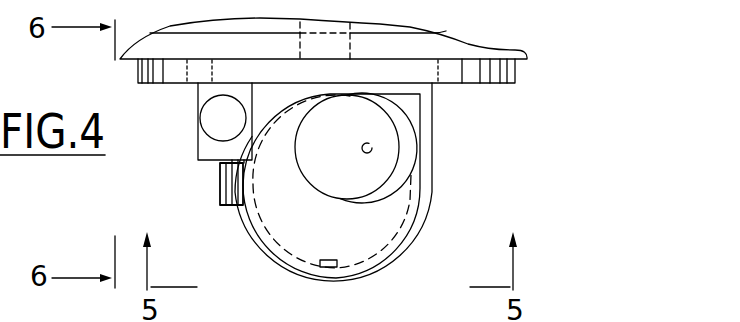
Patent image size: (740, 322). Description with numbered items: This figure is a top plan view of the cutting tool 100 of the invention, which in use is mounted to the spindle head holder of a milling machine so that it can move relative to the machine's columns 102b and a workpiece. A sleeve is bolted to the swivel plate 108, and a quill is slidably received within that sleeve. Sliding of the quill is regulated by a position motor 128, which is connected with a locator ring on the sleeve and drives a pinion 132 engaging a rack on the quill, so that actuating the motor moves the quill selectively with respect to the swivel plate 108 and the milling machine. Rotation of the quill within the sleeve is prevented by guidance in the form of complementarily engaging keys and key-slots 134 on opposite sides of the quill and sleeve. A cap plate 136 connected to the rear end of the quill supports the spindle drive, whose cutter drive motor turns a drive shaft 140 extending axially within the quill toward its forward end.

The cutting tool 100 is at (448, 146).
The columns 102b is at (144, 38).
The swivel plate 108 is at (137, 68).
The position motor 128 is at (198, 117).
The pinion 132 is at (219, 182).
The keys and key-slots 134 is at (372, 240).
The cap plate 136 is at (352, 203).
The drive shaft 140 is at (365, 140).